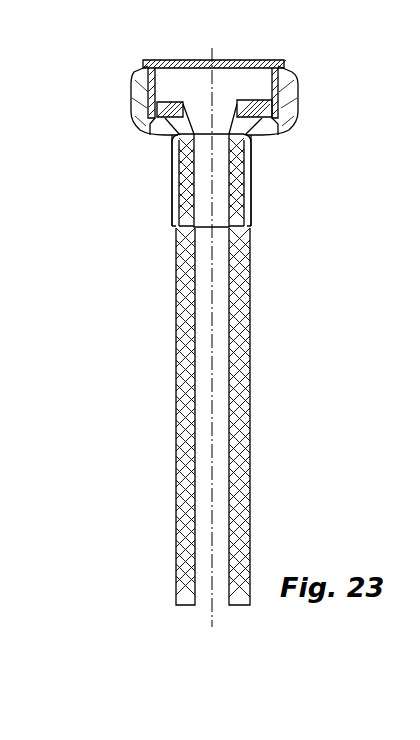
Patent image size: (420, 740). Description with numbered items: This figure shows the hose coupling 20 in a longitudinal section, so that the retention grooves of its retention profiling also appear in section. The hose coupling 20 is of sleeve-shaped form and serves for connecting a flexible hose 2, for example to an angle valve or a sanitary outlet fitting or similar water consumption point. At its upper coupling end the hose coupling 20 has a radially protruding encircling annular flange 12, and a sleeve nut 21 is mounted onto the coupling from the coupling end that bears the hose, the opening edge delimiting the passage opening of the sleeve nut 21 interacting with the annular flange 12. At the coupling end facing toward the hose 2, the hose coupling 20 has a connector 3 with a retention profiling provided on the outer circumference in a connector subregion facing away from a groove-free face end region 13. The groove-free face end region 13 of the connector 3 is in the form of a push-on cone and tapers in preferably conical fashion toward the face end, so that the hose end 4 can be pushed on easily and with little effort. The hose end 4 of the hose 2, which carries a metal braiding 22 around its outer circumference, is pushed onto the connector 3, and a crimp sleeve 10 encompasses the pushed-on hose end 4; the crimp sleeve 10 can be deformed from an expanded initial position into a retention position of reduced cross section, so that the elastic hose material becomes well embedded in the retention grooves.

The hose coupling 20 is at (108, 129).
The sleeve nut 21 is at (283, 90).
The annular flange 12 is at (280, 131).
The connector 3 is at (253, 174).
The hose end 4 is at (252, 201).
The groove-free face end region 13 is at (242, 228).
The crimp sleeve 10 is at (172, 200).
The flexible hose 2 is at (247, 382).
The metal braiding 22 is at (240, 448).